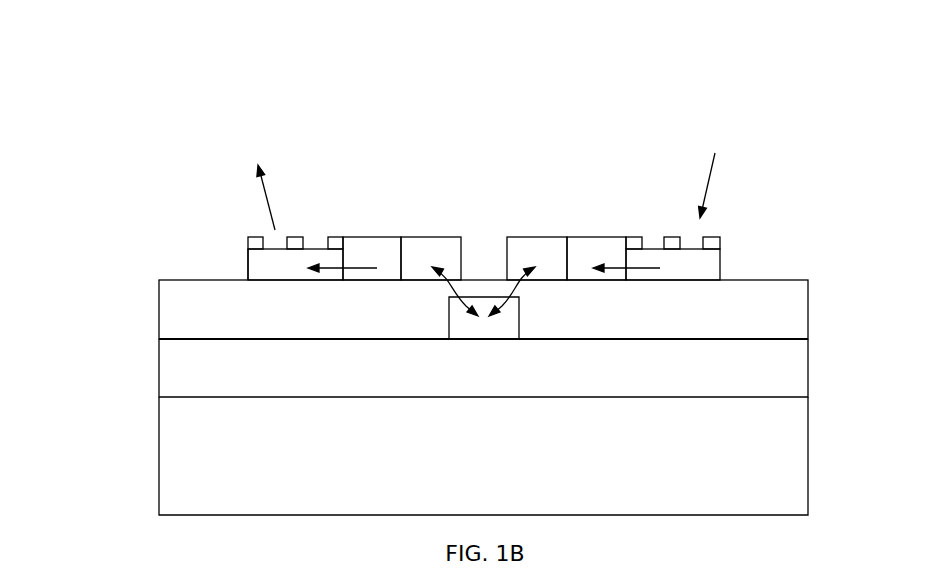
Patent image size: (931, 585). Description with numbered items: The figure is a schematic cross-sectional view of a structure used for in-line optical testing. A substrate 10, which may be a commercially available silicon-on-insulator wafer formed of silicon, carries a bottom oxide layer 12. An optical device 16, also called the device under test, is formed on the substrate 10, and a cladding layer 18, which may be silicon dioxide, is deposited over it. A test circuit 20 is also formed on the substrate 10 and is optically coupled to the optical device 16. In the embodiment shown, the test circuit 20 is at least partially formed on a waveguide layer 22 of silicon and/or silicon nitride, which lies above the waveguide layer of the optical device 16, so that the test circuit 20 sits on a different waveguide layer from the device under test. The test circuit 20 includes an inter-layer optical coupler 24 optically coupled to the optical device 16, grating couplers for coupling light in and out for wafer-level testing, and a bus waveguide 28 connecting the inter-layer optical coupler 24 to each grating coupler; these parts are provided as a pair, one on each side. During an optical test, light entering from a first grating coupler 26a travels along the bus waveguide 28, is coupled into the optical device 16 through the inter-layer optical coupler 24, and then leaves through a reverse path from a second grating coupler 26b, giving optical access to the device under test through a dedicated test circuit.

The substrate 10 is at (190, 483).
The bottom oxide layer 12 is at (175, 377).
The optical device 16 is at (478, 325).
The cladding layer 18 is at (175, 302).
The test circuit 20 is at (661, 134).
The waveguide layer 22 is at (257, 262).
The inter-layer optical coupler 24 is at (457, 250).
The first grating coupler 26a is at (637, 248).
The second grating coupler 26b is at (342, 248).
The bus waveguide 28 is at (382, 250).